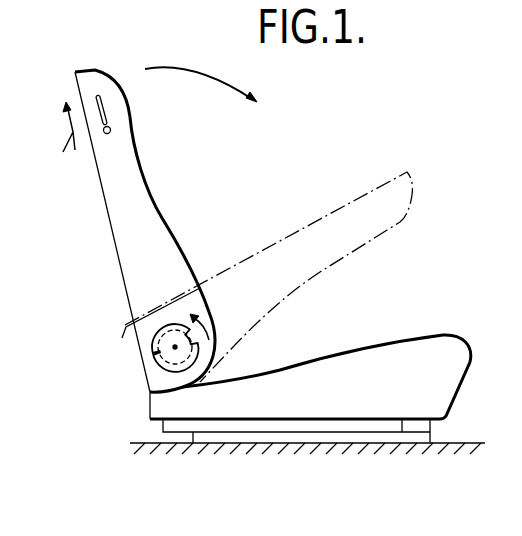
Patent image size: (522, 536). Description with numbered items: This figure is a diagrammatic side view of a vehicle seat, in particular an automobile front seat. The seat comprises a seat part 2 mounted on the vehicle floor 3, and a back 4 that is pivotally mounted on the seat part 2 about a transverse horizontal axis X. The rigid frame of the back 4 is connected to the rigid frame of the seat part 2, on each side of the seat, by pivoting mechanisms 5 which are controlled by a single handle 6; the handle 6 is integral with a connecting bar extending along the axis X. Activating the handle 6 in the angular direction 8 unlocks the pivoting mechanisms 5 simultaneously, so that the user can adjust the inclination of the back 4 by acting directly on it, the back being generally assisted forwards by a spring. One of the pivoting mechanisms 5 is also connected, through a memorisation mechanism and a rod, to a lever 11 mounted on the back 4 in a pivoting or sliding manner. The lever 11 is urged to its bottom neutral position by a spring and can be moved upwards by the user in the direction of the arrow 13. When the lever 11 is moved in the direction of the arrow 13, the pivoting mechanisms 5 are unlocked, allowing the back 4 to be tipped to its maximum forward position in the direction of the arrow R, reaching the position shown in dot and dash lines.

The seat part 2 is at (390, 368).
The vehicle floor 3 is at (222, 447).
The back 4 is at (117, 170).
The pivoting mechanisms 5 is at (178, 348).
The handle 6 is at (150, 347).
The angular direction 8 is at (203, 320).
The lever 11 is at (110, 130).
The arrow 13 is at (65, 144).
The arrow R is at (197, 73).
The transverse horizontal axis X is at (175, 347).